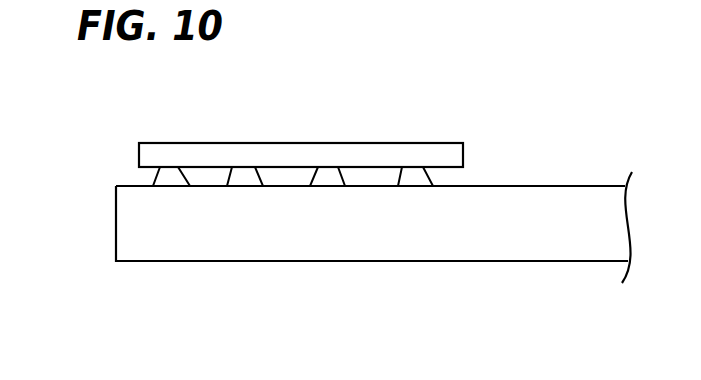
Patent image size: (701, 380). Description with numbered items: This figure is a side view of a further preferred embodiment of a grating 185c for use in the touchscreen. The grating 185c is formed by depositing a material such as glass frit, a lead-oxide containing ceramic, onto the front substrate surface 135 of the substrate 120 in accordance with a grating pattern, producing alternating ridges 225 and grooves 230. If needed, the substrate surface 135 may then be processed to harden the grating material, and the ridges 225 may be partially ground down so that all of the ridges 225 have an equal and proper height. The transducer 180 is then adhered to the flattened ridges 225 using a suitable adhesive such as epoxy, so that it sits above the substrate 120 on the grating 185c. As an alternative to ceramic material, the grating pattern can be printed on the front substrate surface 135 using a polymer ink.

The transducer 180 is at (252, 152).
The grating 185c is at (156, 176).
The ridges 225 is at (414, 178).
The front substrate surface 135 is at (507, 186).
The substrate 120 is at (366, 238).
The grooves 230 is at (280, 180).